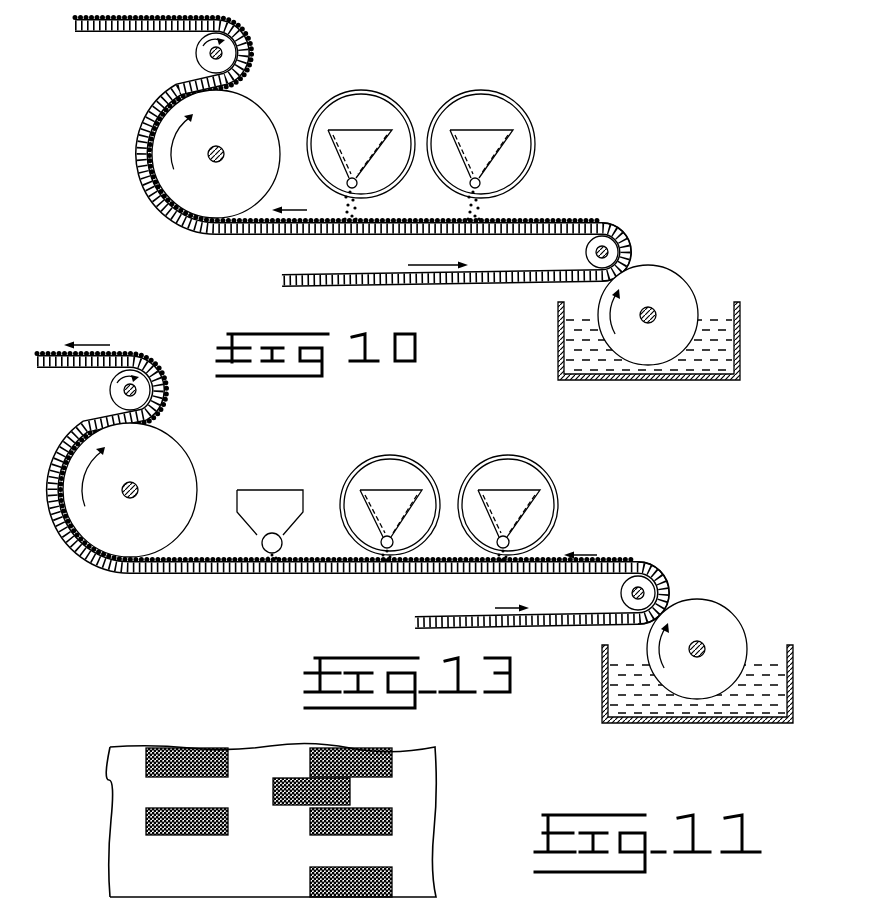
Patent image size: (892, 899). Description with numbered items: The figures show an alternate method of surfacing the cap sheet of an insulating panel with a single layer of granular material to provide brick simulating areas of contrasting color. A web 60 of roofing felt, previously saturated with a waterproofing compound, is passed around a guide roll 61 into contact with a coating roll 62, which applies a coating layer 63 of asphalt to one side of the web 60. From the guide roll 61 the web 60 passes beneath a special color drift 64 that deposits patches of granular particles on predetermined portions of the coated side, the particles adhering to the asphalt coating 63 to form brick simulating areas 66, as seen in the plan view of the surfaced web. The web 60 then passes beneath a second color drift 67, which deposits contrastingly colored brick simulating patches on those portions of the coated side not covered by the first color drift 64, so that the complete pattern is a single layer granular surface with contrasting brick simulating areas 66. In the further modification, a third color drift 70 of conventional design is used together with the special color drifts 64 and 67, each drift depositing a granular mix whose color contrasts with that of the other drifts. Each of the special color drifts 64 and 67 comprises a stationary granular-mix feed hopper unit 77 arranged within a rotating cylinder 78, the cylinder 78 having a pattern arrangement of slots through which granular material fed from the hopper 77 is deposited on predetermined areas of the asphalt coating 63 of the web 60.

In FIG. 10, the web 60 is at (300, 286).
In FIG. 13, the web 60 is at (455, 617).
In FIG. 11, the web 60 is at (431, 829).
In FIG. 10, the guide roll 61 is at (584, 252).
In FIG. 10, the coating roll 62 is at (678, 287).
In FIG. 13, the coating roll 62 is at (722, 618).
In FIG. 10, the coating layer 63 is at (630, 236).
In FIG. 13, the coating layer 63 is at (664, 578).
In FIG. 11, the coating layer 63 is at (120, 873).
In FIG. 10, the color drift 64 is at (536, 114).
In FIG. 13, the color drift 64 is at (535, 464).
In FIG. 11, the brick simulating areas 66 is at (162, 815).
In FIG. 10, the second color drift 67 is at (366, 66).
In FIG. 13, the second color drift 67 is at (405, 463).
In FIG. 13, the third color drift 70 is at (274, 488).
In FIG. 13, the feed hopper unit 77 is at (398, 490).
In FIG. 13, the rotating cylinder 78 is at (360, 462).